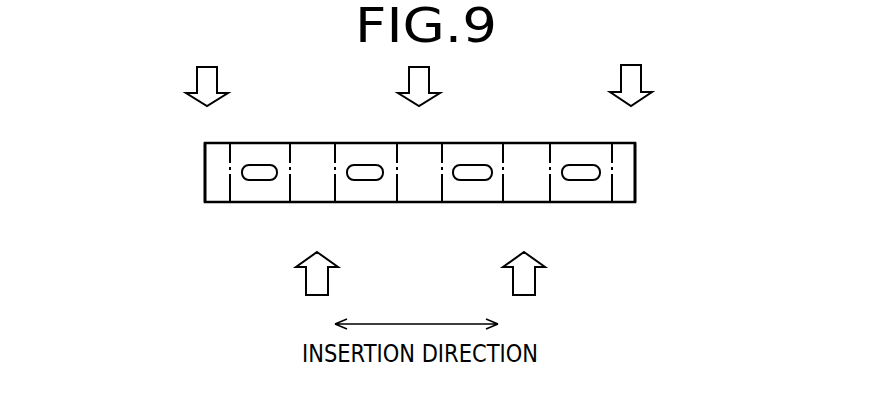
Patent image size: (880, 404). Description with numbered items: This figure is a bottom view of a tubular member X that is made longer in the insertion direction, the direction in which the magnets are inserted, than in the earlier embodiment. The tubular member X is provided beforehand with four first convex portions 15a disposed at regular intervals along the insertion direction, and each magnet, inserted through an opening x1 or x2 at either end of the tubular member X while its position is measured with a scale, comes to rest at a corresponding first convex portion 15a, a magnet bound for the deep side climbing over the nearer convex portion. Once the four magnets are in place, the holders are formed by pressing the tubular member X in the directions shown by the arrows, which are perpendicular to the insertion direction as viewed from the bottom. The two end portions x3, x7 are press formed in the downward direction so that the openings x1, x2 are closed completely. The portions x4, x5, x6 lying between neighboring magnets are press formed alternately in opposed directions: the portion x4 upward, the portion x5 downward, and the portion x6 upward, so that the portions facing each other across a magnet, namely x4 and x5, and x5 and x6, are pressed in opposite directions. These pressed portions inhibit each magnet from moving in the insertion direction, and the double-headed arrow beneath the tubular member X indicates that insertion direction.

The tubular member X is at (197, 124).
The opening x1 is at (203, 176).
The opening x2 is at (641, 172).
The end portion x3 is at (218, 192).
The portion between magnets x4 is at (313, 192).
The portion between magnets x5 is at (420, 192).
The portion between magnets x6 is at (527, 192).
The end portion x7 is at (622, 192).
The first convex portion 15a is at (259, 170).